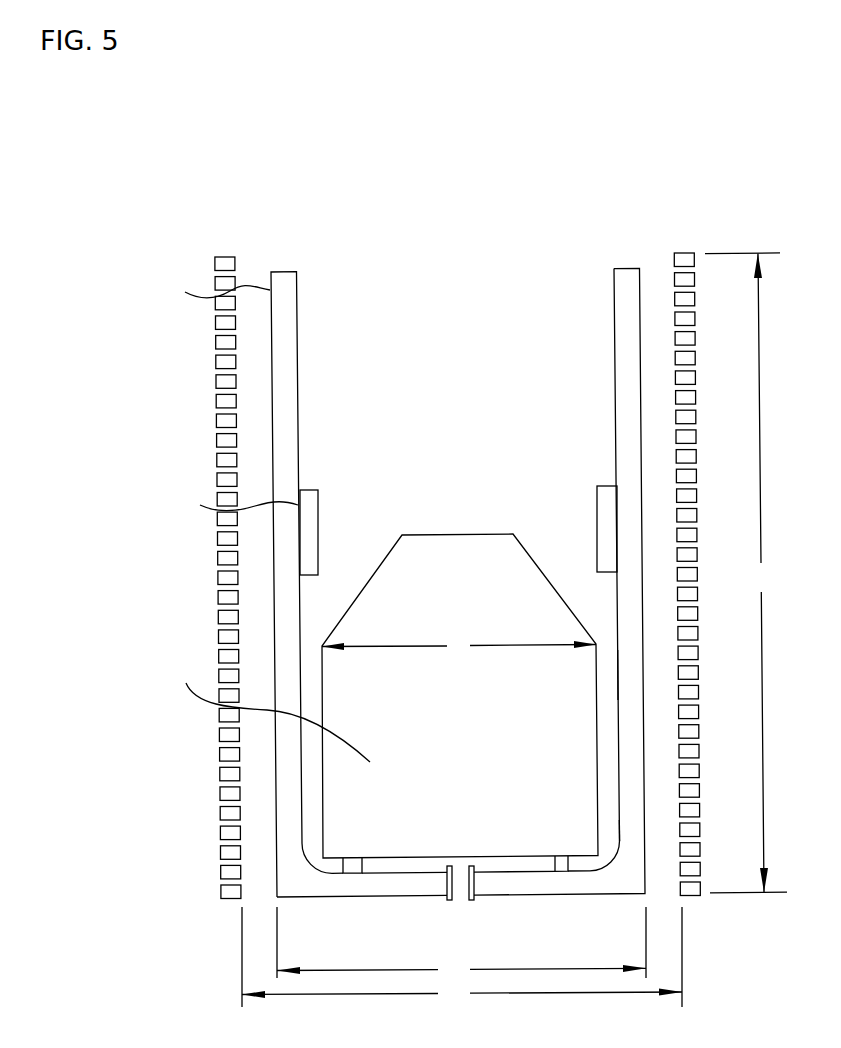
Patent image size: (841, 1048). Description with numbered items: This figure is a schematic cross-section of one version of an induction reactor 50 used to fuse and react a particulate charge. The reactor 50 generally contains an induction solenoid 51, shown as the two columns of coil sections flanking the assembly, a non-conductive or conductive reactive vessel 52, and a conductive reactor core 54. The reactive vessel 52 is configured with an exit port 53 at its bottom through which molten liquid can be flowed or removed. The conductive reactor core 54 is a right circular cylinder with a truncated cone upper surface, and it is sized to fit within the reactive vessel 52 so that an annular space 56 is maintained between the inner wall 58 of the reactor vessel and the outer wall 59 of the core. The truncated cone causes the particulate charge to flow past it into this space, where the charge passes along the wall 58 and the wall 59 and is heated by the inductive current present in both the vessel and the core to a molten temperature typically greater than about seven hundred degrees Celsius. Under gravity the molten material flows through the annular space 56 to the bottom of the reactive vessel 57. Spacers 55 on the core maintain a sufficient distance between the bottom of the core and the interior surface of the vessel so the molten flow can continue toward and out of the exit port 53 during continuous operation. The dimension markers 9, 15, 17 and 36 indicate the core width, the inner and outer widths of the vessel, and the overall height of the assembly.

The reactor 50 is at (195, 825).
The induction solenoid 51 is at (220, 892).
The reactive vessel 52 is at (290, 887).
The exit port 53 is at (458, 883).
The conductive reactor core 54 is at (478, 736).
The spacers 55 is at (562, 867).
The annular space 56 is at (608, 760).
The bottom of the reactive vessel 57 is at (502, 865).
The wall of the reactor vessel 58 is at (618, 688).
The wall of the core 59 is at (598, 666).
The core width dimension 9 is at (459, 646).
The inner width dimension 15 is at (461, 944).
The outer width dimension 17 is at (462, 957).
The height dimension 36 is at (746, 573).